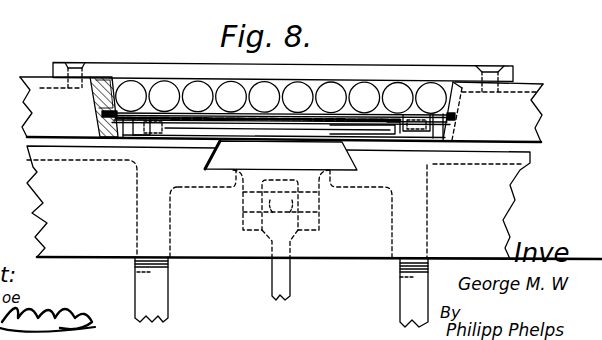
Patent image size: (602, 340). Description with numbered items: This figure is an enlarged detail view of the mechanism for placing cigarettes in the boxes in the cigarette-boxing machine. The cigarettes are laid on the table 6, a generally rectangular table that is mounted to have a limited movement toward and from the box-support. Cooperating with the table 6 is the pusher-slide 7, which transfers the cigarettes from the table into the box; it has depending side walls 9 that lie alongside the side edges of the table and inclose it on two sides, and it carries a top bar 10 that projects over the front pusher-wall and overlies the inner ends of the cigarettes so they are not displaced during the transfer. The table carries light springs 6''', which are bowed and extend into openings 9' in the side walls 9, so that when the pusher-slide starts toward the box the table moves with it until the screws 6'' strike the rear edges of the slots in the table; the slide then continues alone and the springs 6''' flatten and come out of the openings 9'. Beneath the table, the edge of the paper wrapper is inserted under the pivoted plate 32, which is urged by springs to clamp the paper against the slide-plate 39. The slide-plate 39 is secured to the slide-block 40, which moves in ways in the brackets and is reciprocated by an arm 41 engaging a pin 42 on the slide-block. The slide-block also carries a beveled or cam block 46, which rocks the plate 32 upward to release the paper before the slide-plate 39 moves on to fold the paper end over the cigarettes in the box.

The table 6 is at (281, 81).
The screws 6'' is at (286, 141).
The light springs 6''' is at (280, 120).
The pusher-slide 7 is at (21, 112).
The side walls 9 is at (281, 110).
The openings 9' is at (291, 115).
The top bar 10 is at (403, 66).
The pivoted plate 32 is at (200, 121).
The slide-plate 39 is at (405, 129).
The slide-block 40 is at (281, 155).
The arm 41 is at (289, 286).
The pin 42 is at (330, 203).
The beveled or cam block 46 is at (360, 126).